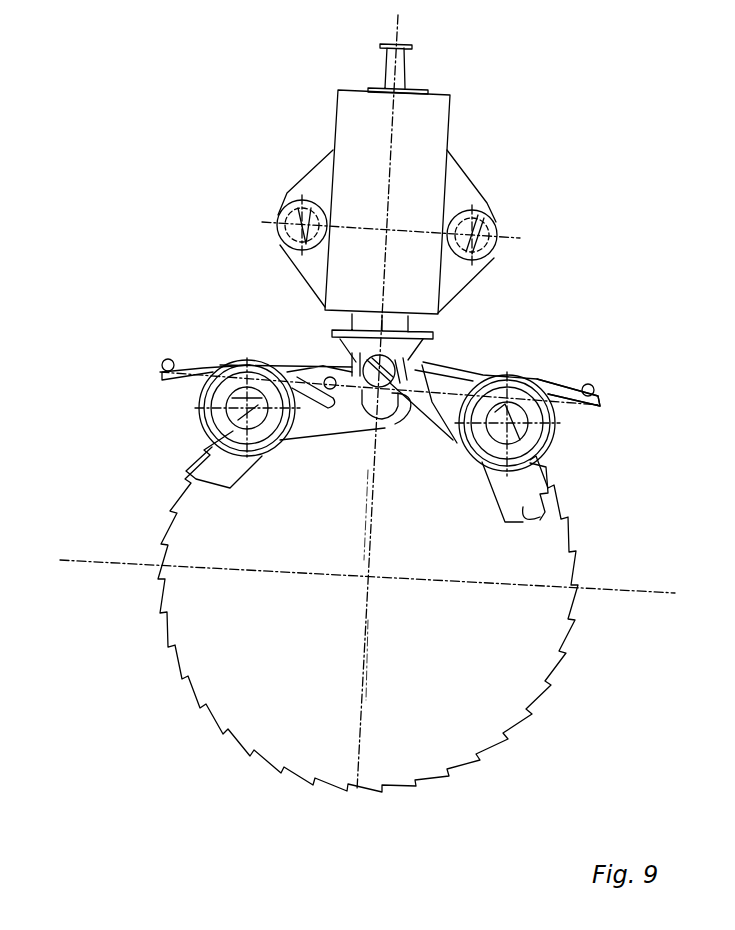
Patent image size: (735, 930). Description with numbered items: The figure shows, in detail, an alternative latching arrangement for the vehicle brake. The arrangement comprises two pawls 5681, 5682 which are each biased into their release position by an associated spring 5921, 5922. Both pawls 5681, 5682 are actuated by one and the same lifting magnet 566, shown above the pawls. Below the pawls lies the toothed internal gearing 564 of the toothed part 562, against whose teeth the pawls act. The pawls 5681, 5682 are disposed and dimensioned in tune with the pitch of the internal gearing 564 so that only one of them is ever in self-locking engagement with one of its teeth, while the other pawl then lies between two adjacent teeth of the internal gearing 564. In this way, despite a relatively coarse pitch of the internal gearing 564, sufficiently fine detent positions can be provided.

The lifting magnet 566 is at (432, 120).
The spring 5921 is at (190, 374).
The spring 5922 is at (572, 395).
The pawl 5681 is at (215, 470).
The pawl 5682 is at (525, 522).
The saw blade teeth 562 is at (283, 763).
The internal gearing 564 is at (508, 722).